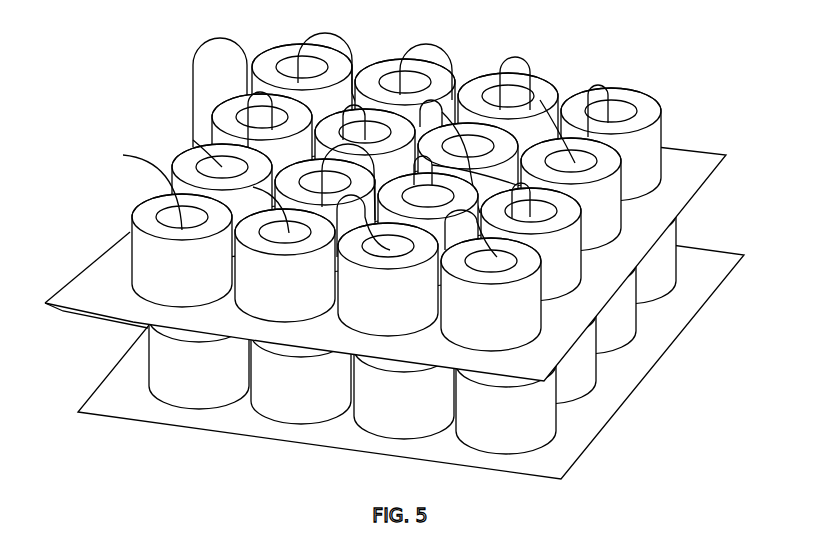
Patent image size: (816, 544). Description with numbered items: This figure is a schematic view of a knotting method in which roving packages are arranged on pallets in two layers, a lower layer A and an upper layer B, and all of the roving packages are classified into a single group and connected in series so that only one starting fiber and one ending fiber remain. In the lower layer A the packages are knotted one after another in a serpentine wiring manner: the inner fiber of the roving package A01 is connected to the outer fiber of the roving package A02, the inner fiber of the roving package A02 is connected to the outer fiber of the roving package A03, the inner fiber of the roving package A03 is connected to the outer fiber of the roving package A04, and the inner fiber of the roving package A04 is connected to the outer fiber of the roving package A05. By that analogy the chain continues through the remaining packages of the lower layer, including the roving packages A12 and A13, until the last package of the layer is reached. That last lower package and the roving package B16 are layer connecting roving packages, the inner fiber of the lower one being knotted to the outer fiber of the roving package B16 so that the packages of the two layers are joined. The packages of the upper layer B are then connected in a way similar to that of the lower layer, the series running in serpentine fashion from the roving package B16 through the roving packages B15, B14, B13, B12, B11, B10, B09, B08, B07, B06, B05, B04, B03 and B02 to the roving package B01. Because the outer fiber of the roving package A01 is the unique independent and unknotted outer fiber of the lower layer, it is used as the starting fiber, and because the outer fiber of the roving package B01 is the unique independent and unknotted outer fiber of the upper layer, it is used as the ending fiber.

The roving package A01 is at (199, 352).
The roving package A02 is at (301, 367).
The roving package A03 is at (404, 382).
The roving package A04 is at (506, 397).
The roving package A05 is at (546, 347).
The roving package A12 is at (586, 297).
The roving package A13 is at (626, 247).
The roving package B01 is at (177, 231).
The roving package B02 is at (285, 254).
The roving package B03 is at (387, 265).
The roving package B04 is at (491, 280).
The roving package B05 is at (531, 242).
The roving package B06 is at (447, 221).
The roving package B07 is at (325, 208).
The roving package B08 is at (222, 147).
The roving package B09 is at (262, 149).
The roving package B10 is at (365, 163).
The roving package B11 is at (468, 168).
The roving package B12 is at (571, 175).
The roving package B13 is at (611, 143).
The roving package B14 is at (508, 121).
The roving package B15 is at (405, 108).
The roving package B16 is at (307, 95).